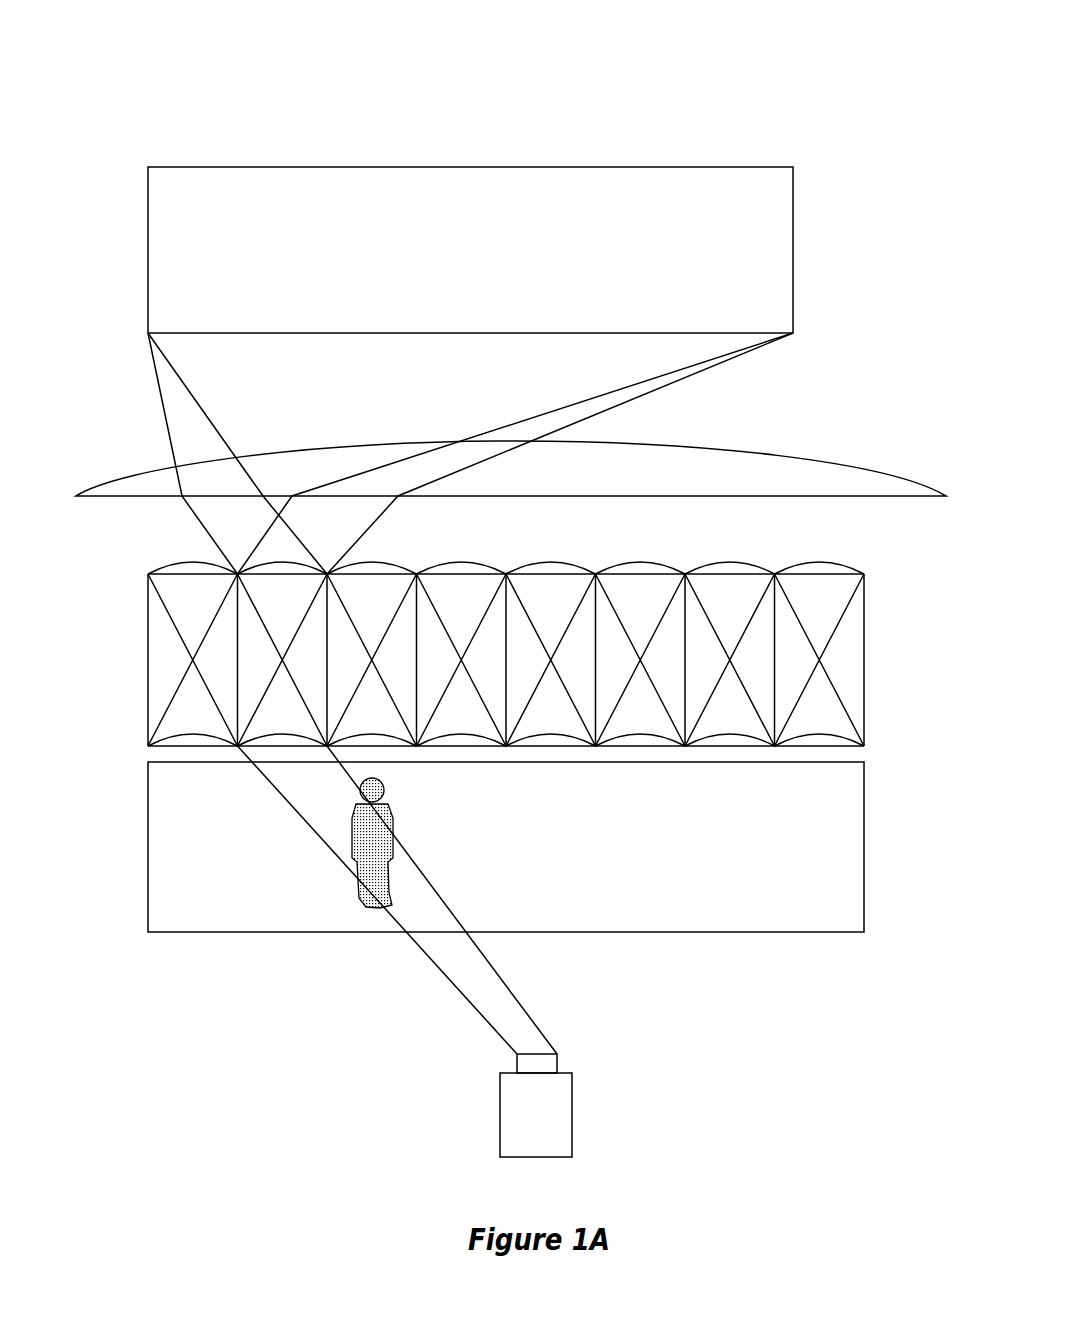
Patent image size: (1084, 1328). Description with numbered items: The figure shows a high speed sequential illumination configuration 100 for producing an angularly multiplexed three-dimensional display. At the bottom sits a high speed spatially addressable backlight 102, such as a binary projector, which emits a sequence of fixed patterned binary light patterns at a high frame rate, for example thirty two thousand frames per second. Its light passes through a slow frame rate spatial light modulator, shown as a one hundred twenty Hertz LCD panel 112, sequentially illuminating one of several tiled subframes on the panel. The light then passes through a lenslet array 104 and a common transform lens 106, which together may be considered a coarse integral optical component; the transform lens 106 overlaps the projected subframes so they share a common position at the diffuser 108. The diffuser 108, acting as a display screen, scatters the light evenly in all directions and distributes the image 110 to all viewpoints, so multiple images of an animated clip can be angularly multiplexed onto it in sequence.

The high speed sequential illumination configuration 100 is at (545, 42).
The high speed spatially addressable backlight 102 is at (512, 1103).
The lenslet array 104 is at (102, 583).
The common transform lens 106 is at (153, 471).
The diffuser 108 is at (243, 165).
The image 110 is at (392, 822).
The LCD panel 112 is at (757, 932).